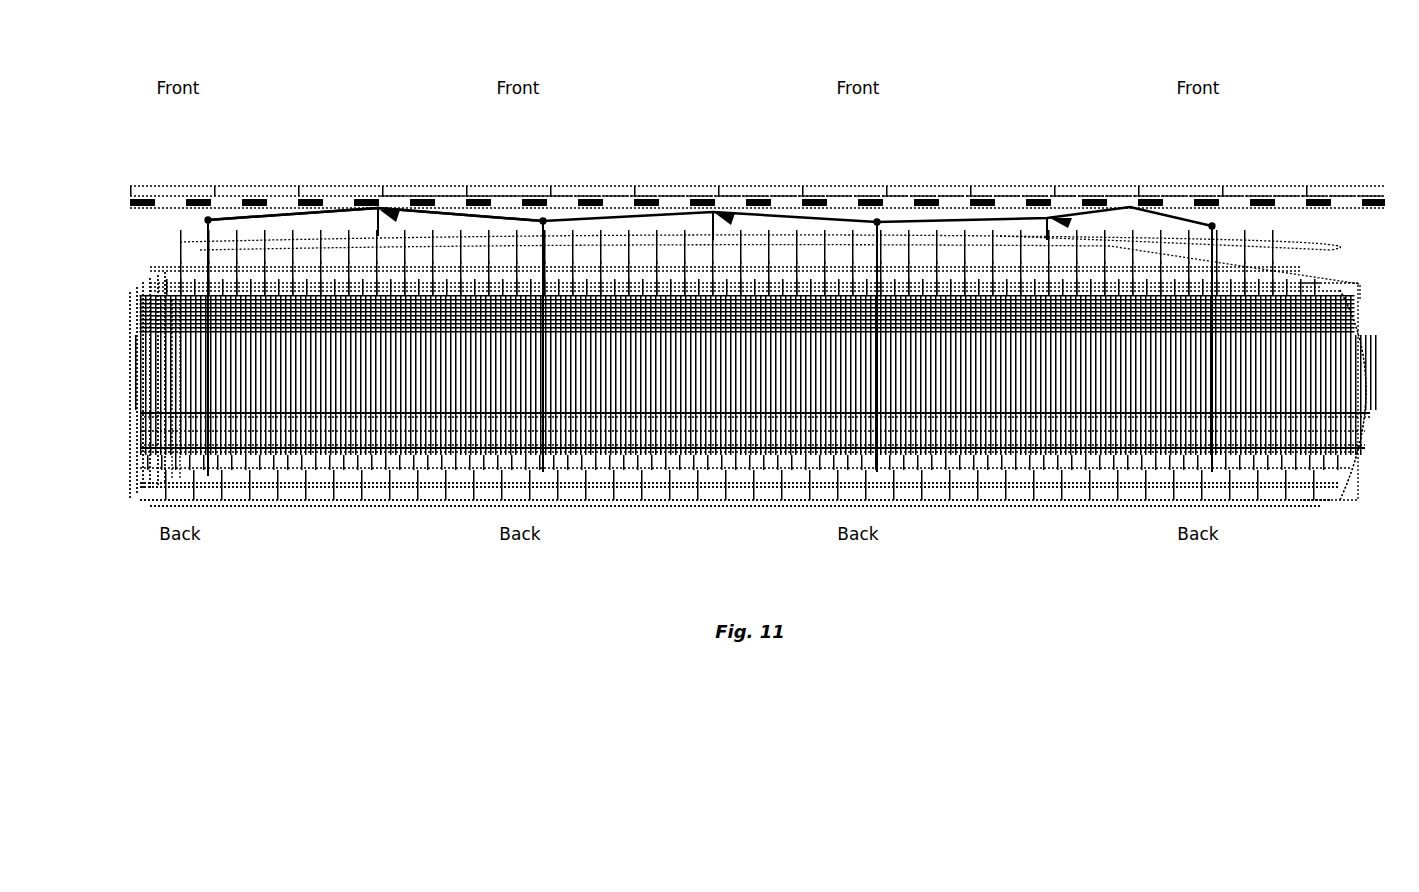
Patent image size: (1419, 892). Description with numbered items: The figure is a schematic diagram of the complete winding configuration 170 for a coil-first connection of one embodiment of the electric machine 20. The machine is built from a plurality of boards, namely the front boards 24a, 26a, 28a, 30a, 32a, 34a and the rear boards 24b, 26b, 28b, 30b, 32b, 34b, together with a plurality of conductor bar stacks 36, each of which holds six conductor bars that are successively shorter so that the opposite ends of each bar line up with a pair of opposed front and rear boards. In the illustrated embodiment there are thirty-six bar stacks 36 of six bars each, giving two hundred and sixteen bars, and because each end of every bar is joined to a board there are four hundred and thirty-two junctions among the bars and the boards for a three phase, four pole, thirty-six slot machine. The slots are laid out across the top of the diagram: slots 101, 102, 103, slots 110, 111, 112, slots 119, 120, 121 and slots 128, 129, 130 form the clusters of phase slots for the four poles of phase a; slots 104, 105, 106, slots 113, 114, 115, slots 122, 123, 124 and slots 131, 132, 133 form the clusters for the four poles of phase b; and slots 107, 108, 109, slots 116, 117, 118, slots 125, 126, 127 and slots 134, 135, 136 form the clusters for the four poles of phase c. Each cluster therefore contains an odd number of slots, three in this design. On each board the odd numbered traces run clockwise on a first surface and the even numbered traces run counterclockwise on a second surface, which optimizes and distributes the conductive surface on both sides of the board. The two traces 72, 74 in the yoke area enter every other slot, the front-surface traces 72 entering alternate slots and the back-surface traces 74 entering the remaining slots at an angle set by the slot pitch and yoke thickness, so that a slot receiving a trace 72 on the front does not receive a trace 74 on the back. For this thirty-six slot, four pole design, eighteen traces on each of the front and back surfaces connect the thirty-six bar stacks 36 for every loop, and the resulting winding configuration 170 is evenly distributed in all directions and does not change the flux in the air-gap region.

The electric machine 20 is at (963, 80).
The front board 24a is at (134, 275).
The front board 26a is at (148, 293).
The front board 28a is at (163, 313).
The front board 30a is at (170, 340).
The front board 32a is at (178, 352).
The front board 34a is at (178, 232).
The rear board 24b is at (206, 512).
The rear board 26b is at (213, 488).
The rear board 28b is at (201, 470).
The rear board 30b is at (201, 453).
The rear board 32b is at (203, 436).
The rear board 34b is at (203, 418).
The conductor bar stack 36 is at (1382, 388).
The trace 72 is at (386, 512).
The trace 74 is at (740, 533).
The winding configuration 170 is at (1347, 262).
The slot 101 is at (392, 198).
The slot 102 is at (422, 198).
The slot 103 is at (450, 198).
The slot 104 is at (476, 198).
The slot 105 is at (506, 198).
The slot 106 is at (534, 198).
The slot 107 is at (559, 198).
The slot 108 is at (589, 198).
The slot 109 is at (617, 198).
The slot 110 is at (643, 198).
The slot 111 is at (673, 198).
The slot 112 is at (701, 198).
The slot 113 is at (727, 198).
The slot 114 is at (757, 198).
The slot 115 is at (785, 198).
The slot 116 is at (811, 198).
The slot 117 is at (840, 198).
The slot 118 is at (868, 198).
The slot 119 is at (894, 198).
The slot 120 is at (924, 198).
The slot 121 is at (952, 198).
The slot 122 is at (978, 198).
The slot 123 is at (1008, 198).
The slot 124 is at (1036, 198).
The slot 125 is at (1062, 198).
The slot 126 is at (1092, 198).
The slot 127 is at (1119, 198).
The slot 128 is at (1145, 198).
The slot 129 is at (1175, 198).
The slot 130 is at (1203, 198).
The slot 131 is at (1229, 198).
The slot 132 is at (1259, 198).
The slot 133 is at (1287, 198).
The slot 134 is at (1313, 198).
The slot 135 is at (1343, 198).
The slot 136 is at (1371, 198).